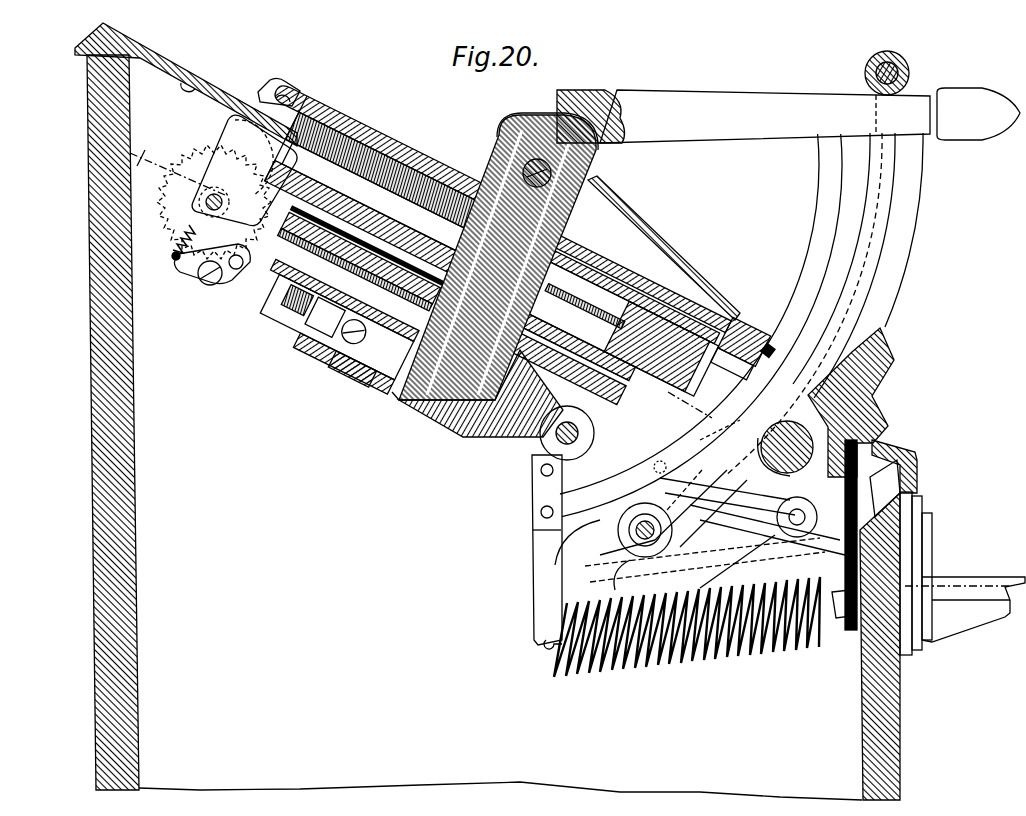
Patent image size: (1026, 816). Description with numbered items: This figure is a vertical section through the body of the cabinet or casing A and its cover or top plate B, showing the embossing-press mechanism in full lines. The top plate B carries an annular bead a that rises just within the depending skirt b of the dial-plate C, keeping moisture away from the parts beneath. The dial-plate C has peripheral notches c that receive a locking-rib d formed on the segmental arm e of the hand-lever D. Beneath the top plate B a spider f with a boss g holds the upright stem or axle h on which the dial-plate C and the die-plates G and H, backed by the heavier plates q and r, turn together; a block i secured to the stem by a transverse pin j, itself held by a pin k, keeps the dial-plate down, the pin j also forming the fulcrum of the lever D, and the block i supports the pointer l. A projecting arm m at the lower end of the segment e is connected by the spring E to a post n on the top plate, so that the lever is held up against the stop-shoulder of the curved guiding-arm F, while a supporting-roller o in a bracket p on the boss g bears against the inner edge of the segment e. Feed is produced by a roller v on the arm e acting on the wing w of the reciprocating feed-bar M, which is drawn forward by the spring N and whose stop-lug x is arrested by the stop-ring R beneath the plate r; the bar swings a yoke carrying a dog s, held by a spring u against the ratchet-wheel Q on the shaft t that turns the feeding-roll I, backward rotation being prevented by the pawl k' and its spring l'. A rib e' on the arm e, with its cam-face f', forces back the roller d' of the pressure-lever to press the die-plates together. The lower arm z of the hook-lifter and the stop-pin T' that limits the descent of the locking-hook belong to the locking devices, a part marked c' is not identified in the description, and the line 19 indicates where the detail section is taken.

The cabinet or casing A is at (133, 350).
The top plate B is at (895, 452).
The dial-plate C is at (389, 162).
The hand-lever D is at (690, 145).
The spring E is at (655, 662).
The curved guiding-arm F is at (882, 312).
The die-plate G is at (360, 234).
The die-plate H is at (364, 252).
The stop-ring R is at (455, 305).
The spring N is at (300, 306).
The feeding-roll I is at (872, 535).
The feed-bar M is at (715, 546).
The ratchet-wheel Q is at (200, 153).
The stop-pin T' is at (738, 503).
The annular bead a is at (538, 206).
The depending skirt b is at (278, 102).
The peripheral notches c is at (279, 79).
The locking-rib d is at (810, 304).
The segmental arm e is at (701, 325).
The supporting-frame or spider f is at (324, 336).
The boss g is at (343, 363).
The stem or axle h is at (400, 405).
The block i is at (498, 164).
The pin j is at (498, 128).
The pin k is at (497, 257).
The dog or pawl k' is at (371, 195).
The pointer or indicator l is at (664, 248).
The spring l' is at (242, 151).
The projecting arm m is at (538, 542).
The stem or post n is at (838, 623).
The supporting-roller o is at (556, 440).
The bracket p is at (470, 470).
The backing plate q is at (369, 252).
The backing plate r is at (343, 313).
The dog or pawl s is at (190, 274).
The shaft t is at (222, 196).
The spring u is at (172, 254).
The roller v is at (720, 429).
The wing or plate w is at (618, 539).
The stop arm or lug x is at (649, 451).
The lower arm of lifter z is at (673, 517).
The rod c' is at (579, 319).
The roller d' is at (627, 530).
The rib e' is at (577, 546).
The cam-face f' is at (785, 409).
The section line 19 is at (420, 279).